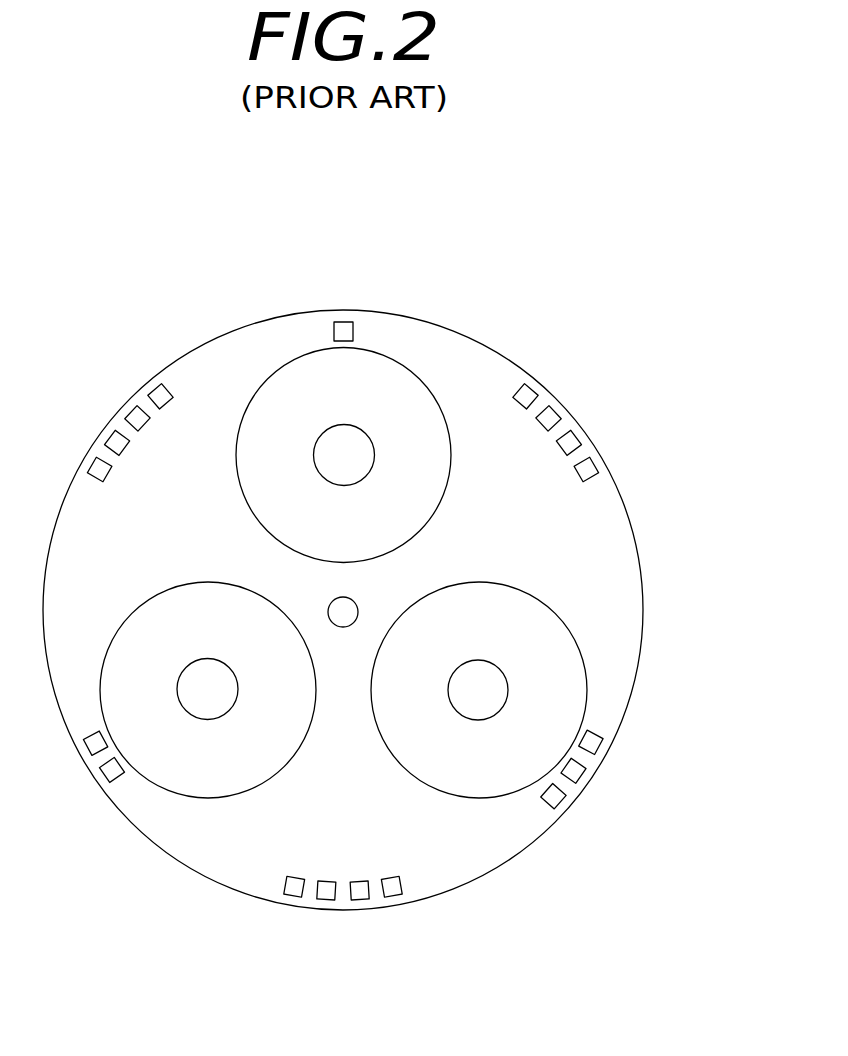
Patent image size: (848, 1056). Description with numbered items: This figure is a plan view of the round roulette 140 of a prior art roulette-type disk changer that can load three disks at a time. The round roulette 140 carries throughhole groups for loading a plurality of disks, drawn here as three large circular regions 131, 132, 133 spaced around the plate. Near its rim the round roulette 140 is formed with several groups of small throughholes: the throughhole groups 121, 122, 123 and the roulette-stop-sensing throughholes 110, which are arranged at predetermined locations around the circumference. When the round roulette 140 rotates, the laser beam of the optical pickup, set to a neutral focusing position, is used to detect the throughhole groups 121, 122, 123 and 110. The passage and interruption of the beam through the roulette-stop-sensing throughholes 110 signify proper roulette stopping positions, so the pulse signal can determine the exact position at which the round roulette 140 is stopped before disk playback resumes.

The round roulette 140 is at (672, 174).
The roulette-stop-sensing throughholes 110 is at (344, 667).
The throughhole group 121 is at (343, 330).
The throughhole group 122 is at (66, 771).
The throughhole group 123 is at (608, 782).
The first circular station 131 is at (393, 413).
The second circular station 132 is at (207, 758).
The third circular station 133 is at (545, 655).